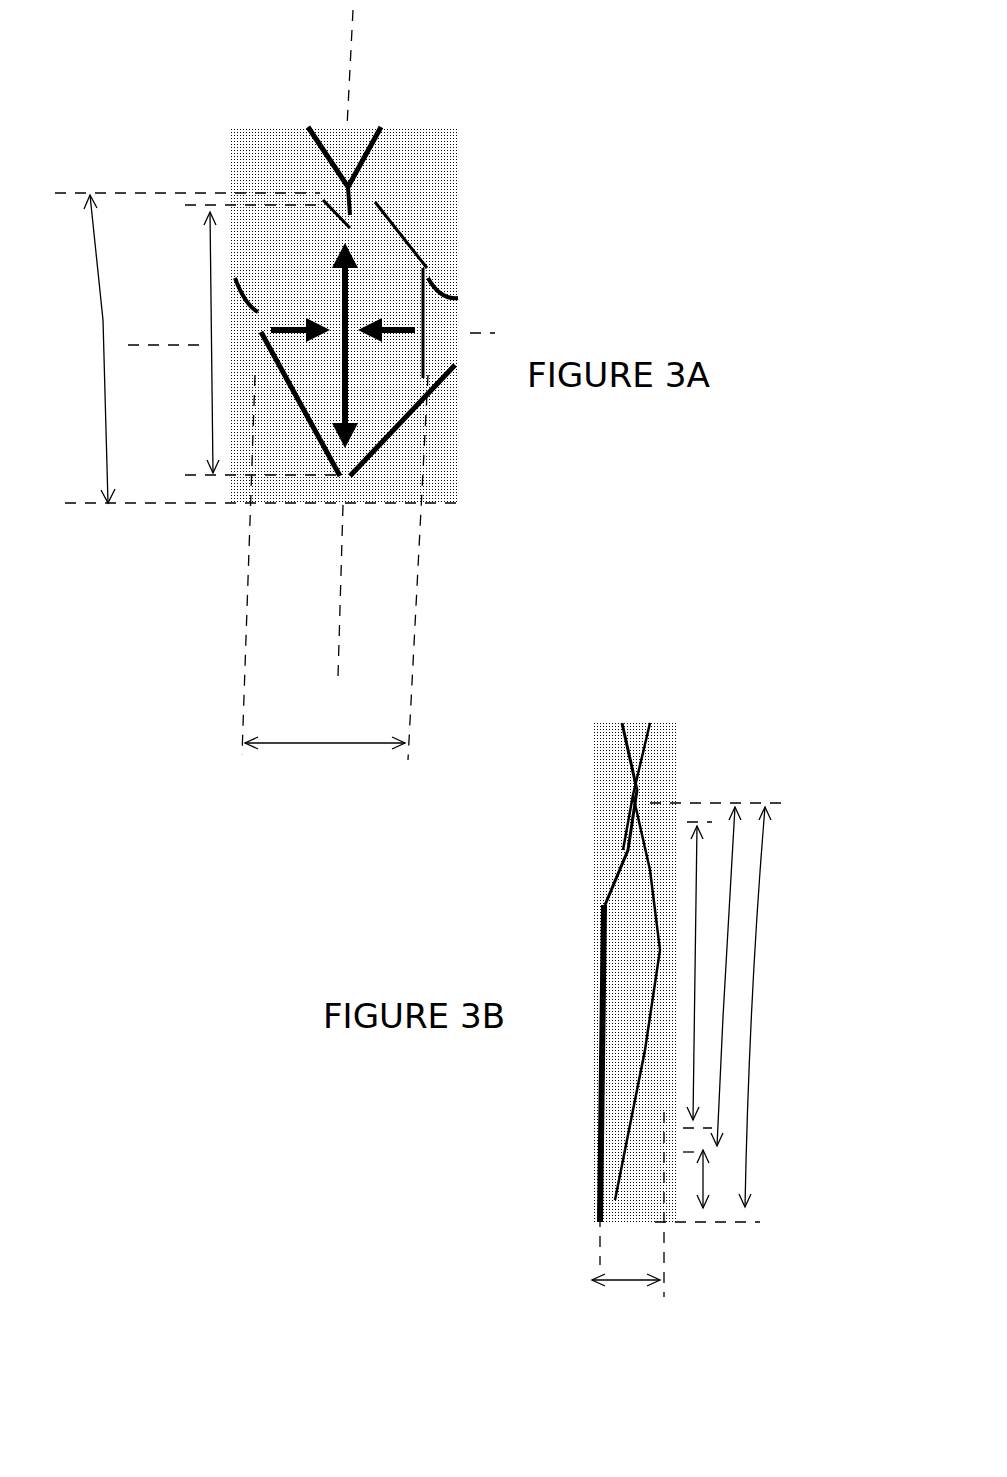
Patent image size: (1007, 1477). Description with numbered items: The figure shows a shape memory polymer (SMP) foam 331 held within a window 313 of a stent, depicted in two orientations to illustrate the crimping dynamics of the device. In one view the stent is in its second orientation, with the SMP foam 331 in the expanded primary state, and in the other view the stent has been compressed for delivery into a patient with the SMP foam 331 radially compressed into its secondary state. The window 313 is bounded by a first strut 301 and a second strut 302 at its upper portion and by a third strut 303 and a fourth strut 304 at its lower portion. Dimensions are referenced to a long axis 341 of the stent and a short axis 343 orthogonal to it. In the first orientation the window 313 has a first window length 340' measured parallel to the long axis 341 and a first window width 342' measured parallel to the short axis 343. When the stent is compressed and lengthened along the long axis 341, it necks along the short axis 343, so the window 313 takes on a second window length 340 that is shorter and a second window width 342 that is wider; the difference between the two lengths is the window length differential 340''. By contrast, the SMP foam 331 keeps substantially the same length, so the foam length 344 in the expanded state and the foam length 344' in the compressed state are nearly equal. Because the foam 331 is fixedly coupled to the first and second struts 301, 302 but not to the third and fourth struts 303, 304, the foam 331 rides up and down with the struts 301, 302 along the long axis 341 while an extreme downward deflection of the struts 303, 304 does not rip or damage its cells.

In FIG. 3A, the first strut 301 is at (300, 253).
In FIG. 3A, the second strut 302 is at (400, 253).
In FIG. 3A, the third strut 303 is at (295, 418).
In FIG. 3A, the fourth strut 304 is at (401, 425).
In FIG. 3A, the window 313 is at (255, 339).
In FIG. 3A, the SMP foam 331 is at (370, 280).
In FIG. 3B, the SMP foam 331 is at (638, 925).
In FIG. 3A, the second window length 340 is at (80, 349).
In FIG. 3B, the second window length 340 is at (776, 1007).
In FIG. 3B, the first window length 340' is at (776, 983).
In FIG. 3B, the window length differential 340'' is at (744, 1213).
In FIG. 3A, the long axis 341 is at (352, 42).
In FIG. 3A, the second window width 342 is at (325, 765).
In FIG. 3B, the first window width 342' is at (610, 1325).
In FIG. 3A, the short axis 343 is at (166, 345).
In FIG. 3A, the foam length 344 is at (185, 342).
In FIG. 3B, the foam length in compressed state 344' is at (719, 973).